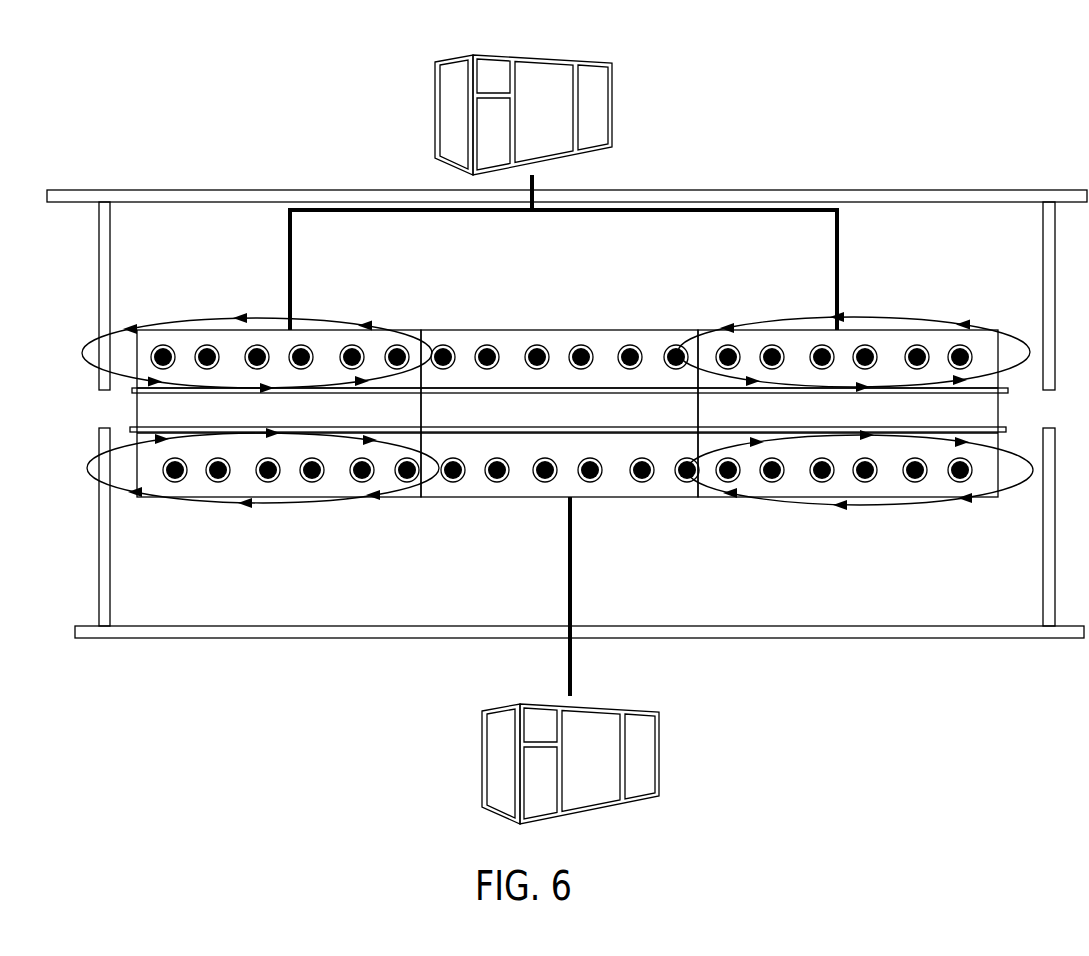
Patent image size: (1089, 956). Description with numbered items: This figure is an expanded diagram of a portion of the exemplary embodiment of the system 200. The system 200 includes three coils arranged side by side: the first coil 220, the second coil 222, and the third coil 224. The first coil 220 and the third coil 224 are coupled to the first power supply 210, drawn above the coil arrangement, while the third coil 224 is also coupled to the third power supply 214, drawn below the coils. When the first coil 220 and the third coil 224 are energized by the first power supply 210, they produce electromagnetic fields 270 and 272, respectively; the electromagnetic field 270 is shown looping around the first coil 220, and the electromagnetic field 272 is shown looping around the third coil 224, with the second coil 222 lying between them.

The system 200 is at (898, 132).
The first power supply 210 is at (612, 104).
The third power supply 214 is at (659, 752).
The first coil 220 is at (288, 497).
The second coil 222 is at (620, 497).
The third coil 224 is at (812, 497).
The electromagnetic field 270 is at (333, 318).
The electromagnetic field 272 is at (903, 313).